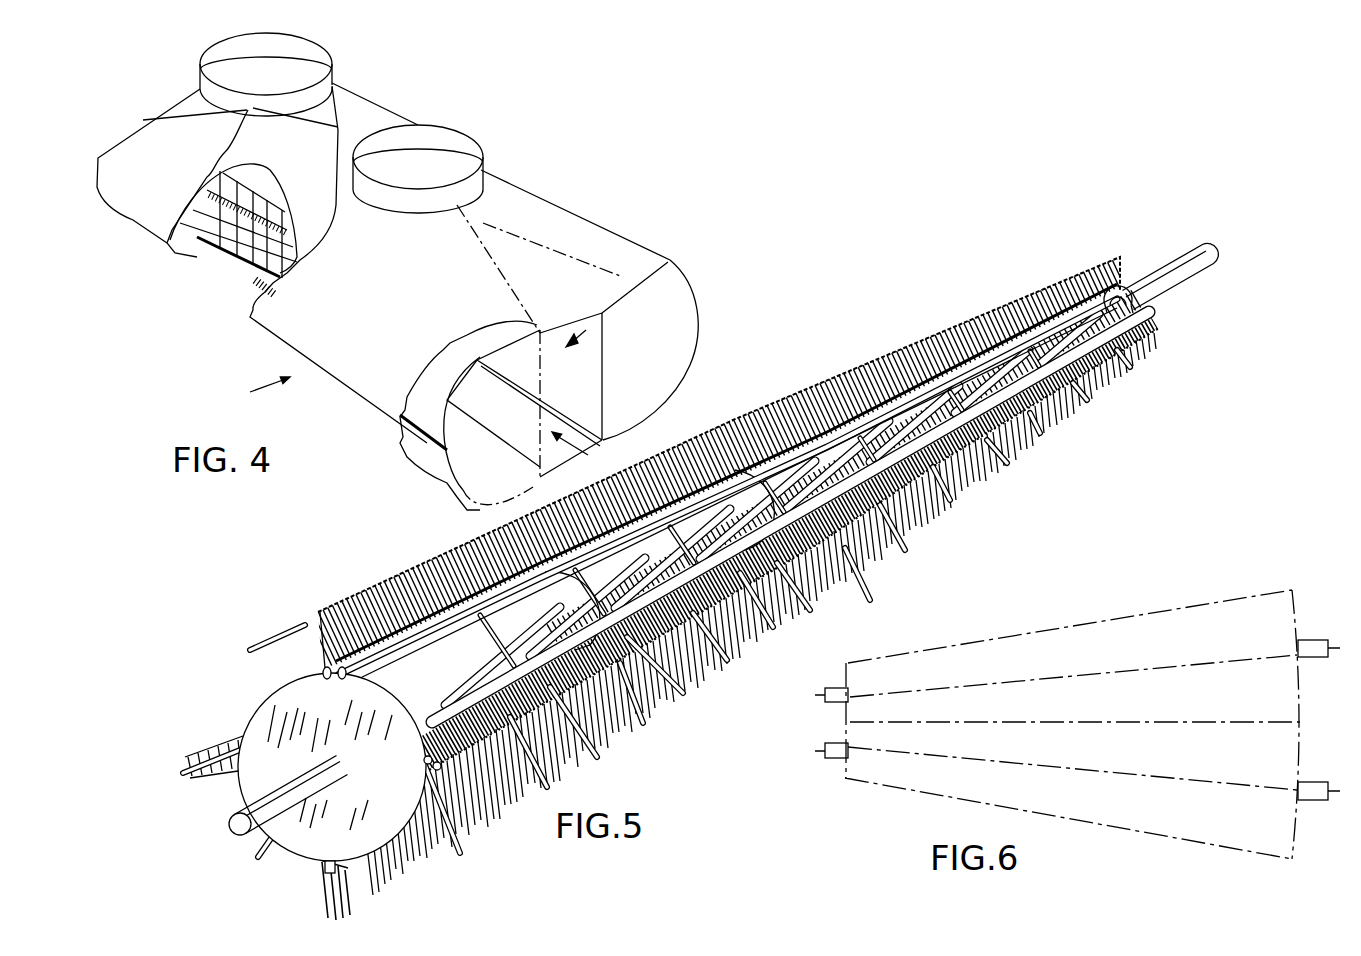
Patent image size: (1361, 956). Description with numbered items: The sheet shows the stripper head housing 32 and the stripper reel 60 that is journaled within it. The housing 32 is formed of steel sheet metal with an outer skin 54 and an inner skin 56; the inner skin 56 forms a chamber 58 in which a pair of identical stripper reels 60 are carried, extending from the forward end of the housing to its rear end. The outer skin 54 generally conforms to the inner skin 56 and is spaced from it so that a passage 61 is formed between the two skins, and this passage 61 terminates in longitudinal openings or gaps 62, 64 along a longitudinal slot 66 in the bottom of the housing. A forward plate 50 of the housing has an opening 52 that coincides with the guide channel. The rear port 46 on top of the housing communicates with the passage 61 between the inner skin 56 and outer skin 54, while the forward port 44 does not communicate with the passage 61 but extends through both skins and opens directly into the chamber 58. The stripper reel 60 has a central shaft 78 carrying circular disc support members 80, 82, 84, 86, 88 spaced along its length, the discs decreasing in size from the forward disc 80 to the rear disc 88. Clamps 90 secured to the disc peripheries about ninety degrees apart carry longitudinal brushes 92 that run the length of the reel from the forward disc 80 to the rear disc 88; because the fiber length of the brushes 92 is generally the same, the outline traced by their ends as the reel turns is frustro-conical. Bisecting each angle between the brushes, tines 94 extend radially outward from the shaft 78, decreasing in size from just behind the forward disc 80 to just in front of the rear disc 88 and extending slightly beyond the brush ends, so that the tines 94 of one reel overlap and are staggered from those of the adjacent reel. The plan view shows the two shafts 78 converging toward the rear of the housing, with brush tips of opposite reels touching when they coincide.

In FIG. 4, the stripper head housing 32 is at (254, 394).
In FIG. 4, the forward port 44 is at (463, 145).
In FIG. 4, the rear port 46 is at (320, 57).
In FIG. 4, the forward plate 50 is at (680, 330).
In FIG. 4, the opening 52 is at (584, 453).
In FIG. 4, the outer skin 54 is at (557, 213).
In FIG. 4, the inner skin 56 is at (302, 150).
In FIG. 4, the chamber 58 is at (602, 313).
In FIG. 4, the stripper reel 60 is at (250, 267).
In FIG. 4, the passage 61 is at (177, 243).
In FIG. 4, the longitudinal opening 62 is at (523, 470).
In FIG. 4, the longitudinal opening 64 is at (612, 434).
In FIG. 4, the longitudinal slot 66 is at (493, 413).
In FIG. 5, the central shaft 78 is at (230, 823).
In FIG. 6, the central shaft 78 is at (1313, 640).
In FIG. 5, the forward disc support member 80 is at (350, 793).
In FIG. 5, the disc support member 82 is at (620, 710).
In FIG. 5, the disc support member 84 is at (742, 545).
In FIG. 5, the disc support member 86 is at (1013, 417).
In FIG. 5, the rear disc support member 88 is at (1133, 287).
In FIG. 5, the clamp 90 is at (498, 575).
In FIG. 5, the longitudinal brush 92 is at (1170, 313).
In FIG. 5, the tine 94 is at (927, 457).